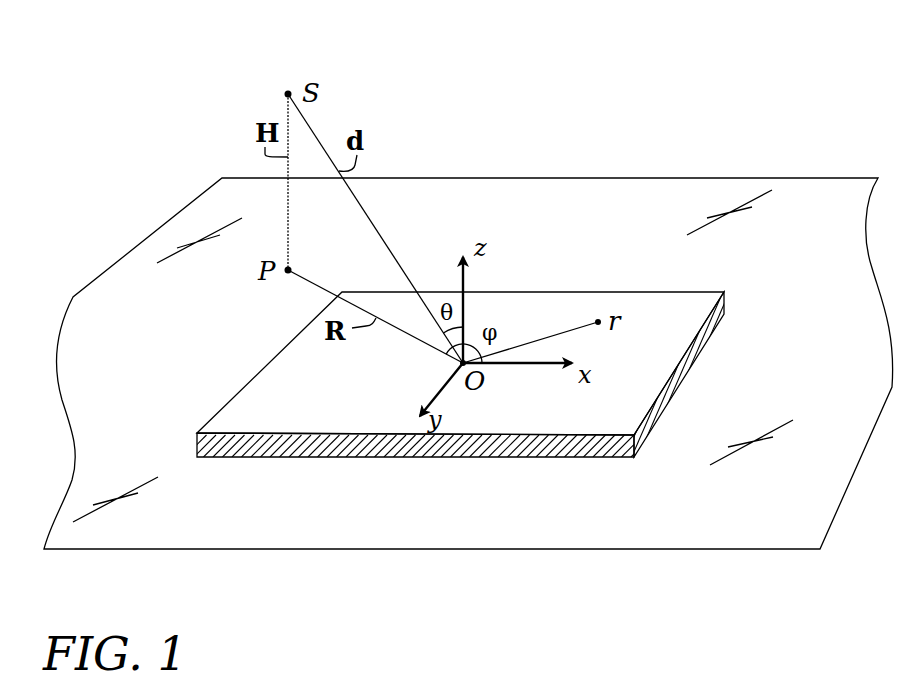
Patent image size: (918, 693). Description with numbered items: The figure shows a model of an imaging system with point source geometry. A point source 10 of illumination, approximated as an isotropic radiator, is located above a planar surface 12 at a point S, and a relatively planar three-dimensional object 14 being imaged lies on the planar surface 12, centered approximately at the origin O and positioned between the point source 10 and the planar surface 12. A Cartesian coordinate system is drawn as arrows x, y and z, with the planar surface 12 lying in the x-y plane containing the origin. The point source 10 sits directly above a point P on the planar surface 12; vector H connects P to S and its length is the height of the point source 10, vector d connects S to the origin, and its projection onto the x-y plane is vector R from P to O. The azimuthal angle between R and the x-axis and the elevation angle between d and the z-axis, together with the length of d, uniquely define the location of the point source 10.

The point source 10 is at (285, 90).
The planar surface 12 is at (590, 188).
The object 14 is at (656, 302).